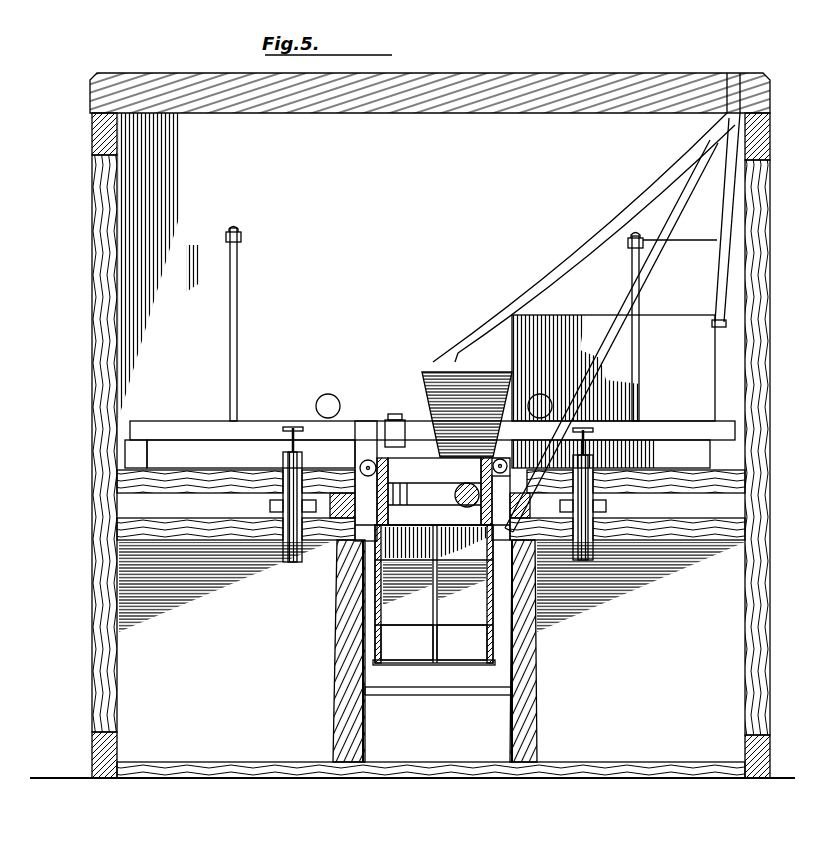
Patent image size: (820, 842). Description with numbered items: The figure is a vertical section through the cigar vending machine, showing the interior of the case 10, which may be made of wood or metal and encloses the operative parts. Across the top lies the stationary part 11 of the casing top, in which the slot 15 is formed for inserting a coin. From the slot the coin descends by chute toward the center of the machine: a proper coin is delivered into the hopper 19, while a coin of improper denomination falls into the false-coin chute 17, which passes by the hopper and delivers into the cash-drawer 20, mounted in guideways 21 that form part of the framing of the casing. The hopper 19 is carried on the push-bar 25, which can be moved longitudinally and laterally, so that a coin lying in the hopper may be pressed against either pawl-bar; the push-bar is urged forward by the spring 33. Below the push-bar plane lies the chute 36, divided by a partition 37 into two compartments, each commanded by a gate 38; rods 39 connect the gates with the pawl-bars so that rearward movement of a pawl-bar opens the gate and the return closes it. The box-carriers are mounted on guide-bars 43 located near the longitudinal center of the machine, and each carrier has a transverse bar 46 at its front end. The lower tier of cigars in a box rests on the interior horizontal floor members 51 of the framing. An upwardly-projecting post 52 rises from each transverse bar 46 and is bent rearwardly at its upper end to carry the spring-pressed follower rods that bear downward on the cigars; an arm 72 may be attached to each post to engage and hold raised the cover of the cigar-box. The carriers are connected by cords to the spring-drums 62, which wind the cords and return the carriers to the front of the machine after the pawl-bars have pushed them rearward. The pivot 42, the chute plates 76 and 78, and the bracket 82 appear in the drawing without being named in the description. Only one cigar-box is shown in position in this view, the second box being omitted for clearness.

The case 10 is at (756, 381).
The stationary part of the top 11 is at (568, 73).
The slot 15 is at (736, 80).
The false-coin chute 17 is at (647, 279).
The hopper 19 is at (478, 375).
The cash-drawer 20 is at (448, 604).
The guideways 21 is at (343, 722).
The push-bar 25 is at (455, 495).
The spring 33 is at (434, 491).
The chute 36 is at (435, 590).
The partition 37 is at (449, 594).
The gates 38 is at (434, 642).
The rods 39 is at (373, 563).
The pivot 42 is at (496, 488).
The guide-bars 43 is at (367, 458).
The transverse bar 46 is at (268, 425).
The floor members 51 is at (220, 487).
The post 52 is at (238, 360).
The spring-drums 62 is at (284, 552).
The arm 72 is at (242, 238).
The lower chute plate 76 is at (600, 230).
The upper chute plate 78 is at (558, 270).
The bracket 82 is at (408, 485).